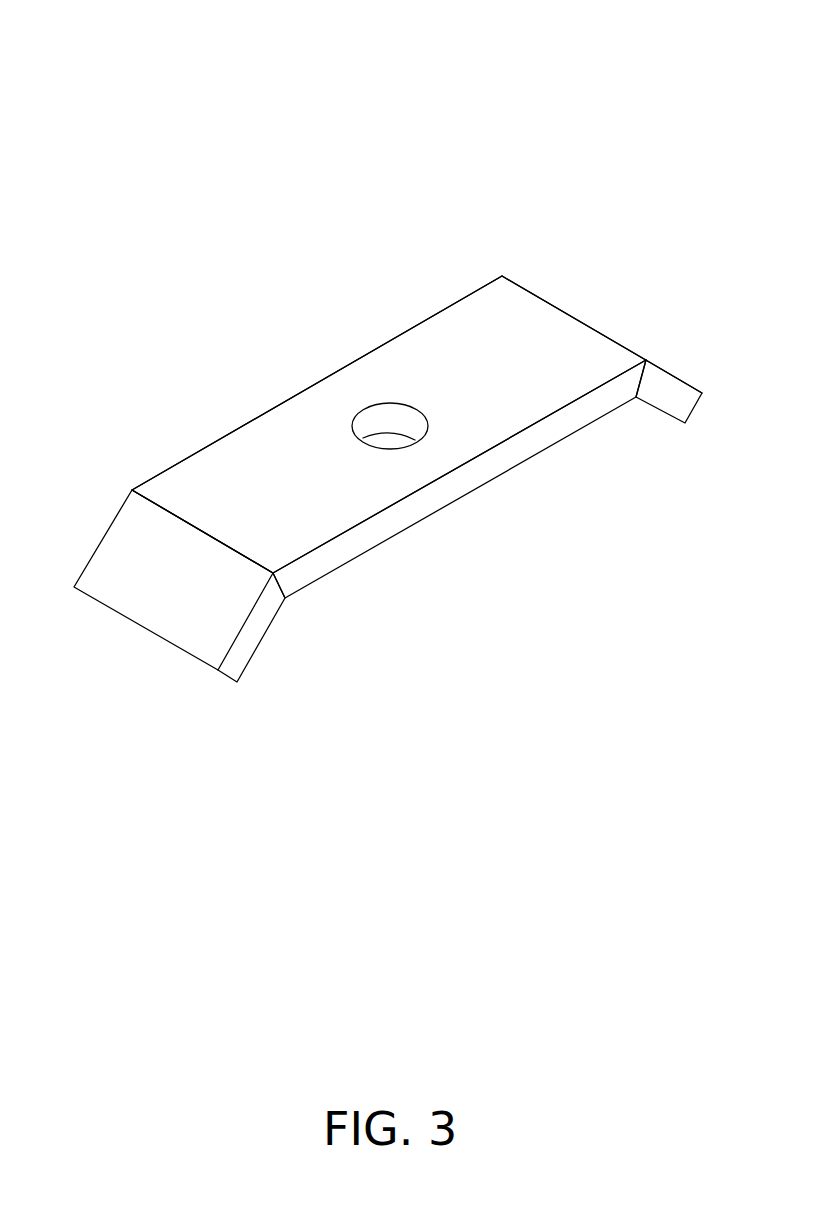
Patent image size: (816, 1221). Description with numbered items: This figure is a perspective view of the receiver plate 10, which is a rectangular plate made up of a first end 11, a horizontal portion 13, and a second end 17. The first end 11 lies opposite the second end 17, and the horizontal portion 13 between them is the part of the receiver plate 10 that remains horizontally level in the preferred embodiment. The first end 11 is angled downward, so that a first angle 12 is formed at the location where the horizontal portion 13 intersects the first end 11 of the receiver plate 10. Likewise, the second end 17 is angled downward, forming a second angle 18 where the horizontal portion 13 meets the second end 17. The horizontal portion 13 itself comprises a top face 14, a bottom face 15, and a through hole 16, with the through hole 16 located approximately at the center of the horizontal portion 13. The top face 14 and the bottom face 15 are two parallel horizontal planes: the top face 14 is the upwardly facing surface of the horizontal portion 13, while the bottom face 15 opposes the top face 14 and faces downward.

The receiver plate 10 is at (605, 72).
The first end 11 is at (150, 635).
The first angle 12 is at (132, 488).
The horizontal portion 13 is at (278, 428).
The top face 14 is at (448, 328).
The bottom face 15 is at (452, 503).
The through hole 16 is at (380, 423).
The second end 17 is at (697, 405).
The second angle 18 is at (552, 302).